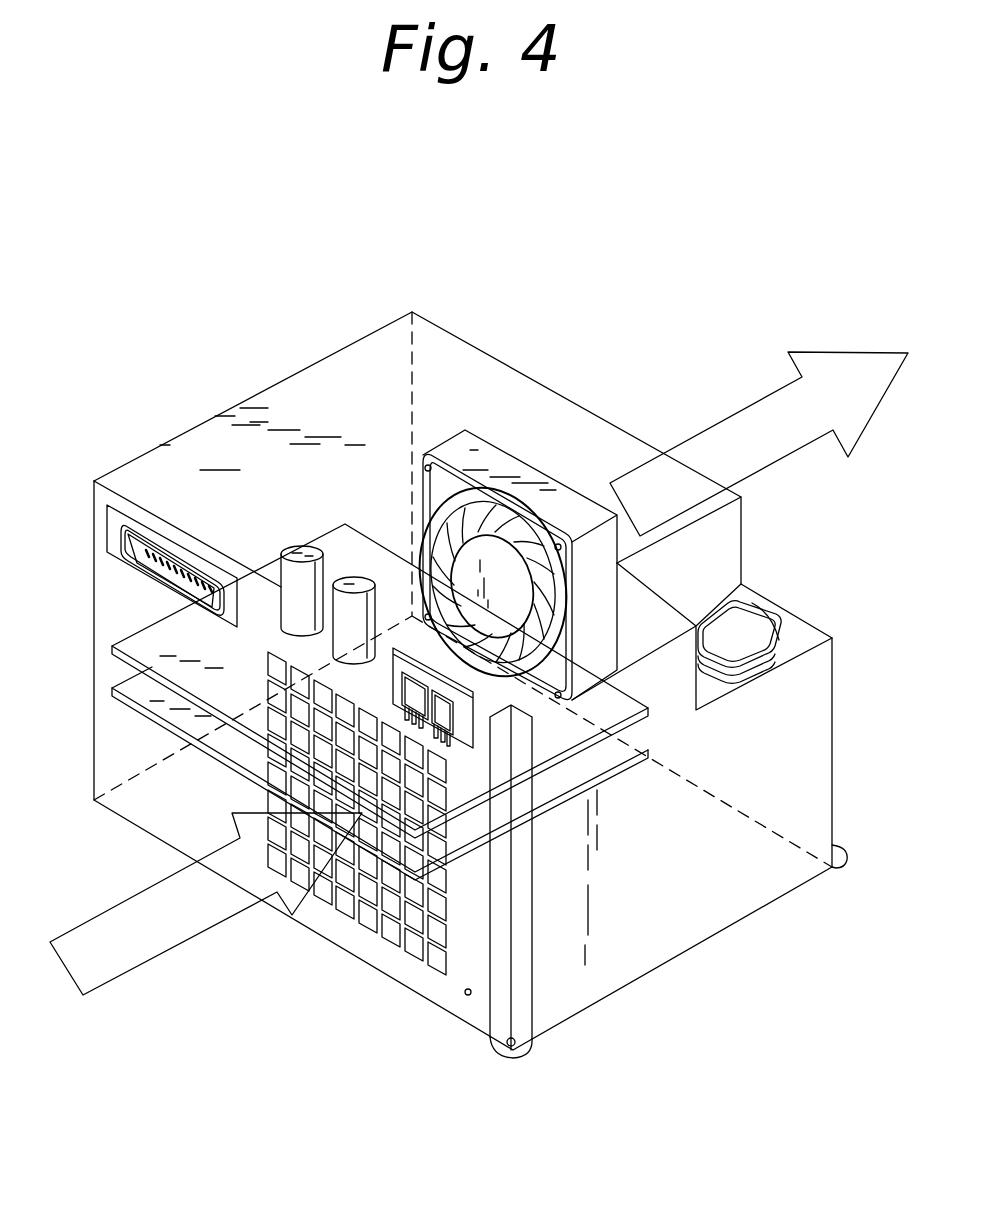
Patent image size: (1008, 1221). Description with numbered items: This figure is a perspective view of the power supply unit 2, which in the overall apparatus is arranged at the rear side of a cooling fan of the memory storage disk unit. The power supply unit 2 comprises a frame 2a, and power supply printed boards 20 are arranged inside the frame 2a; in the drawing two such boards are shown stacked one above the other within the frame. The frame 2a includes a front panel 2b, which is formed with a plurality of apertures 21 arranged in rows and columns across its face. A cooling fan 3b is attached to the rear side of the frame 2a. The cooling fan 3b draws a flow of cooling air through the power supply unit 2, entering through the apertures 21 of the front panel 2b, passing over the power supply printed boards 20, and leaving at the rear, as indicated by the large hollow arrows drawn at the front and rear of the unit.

The power supply unit 2 is at (480, 282).
The frame 2a is at (277, 392).
The front panel 2b is at (347, 943).
The cooling fan 3b is at (490, 450).
The power supply printed boards 20 is at (135, 687).
The apertures 21 is at (436, 966).